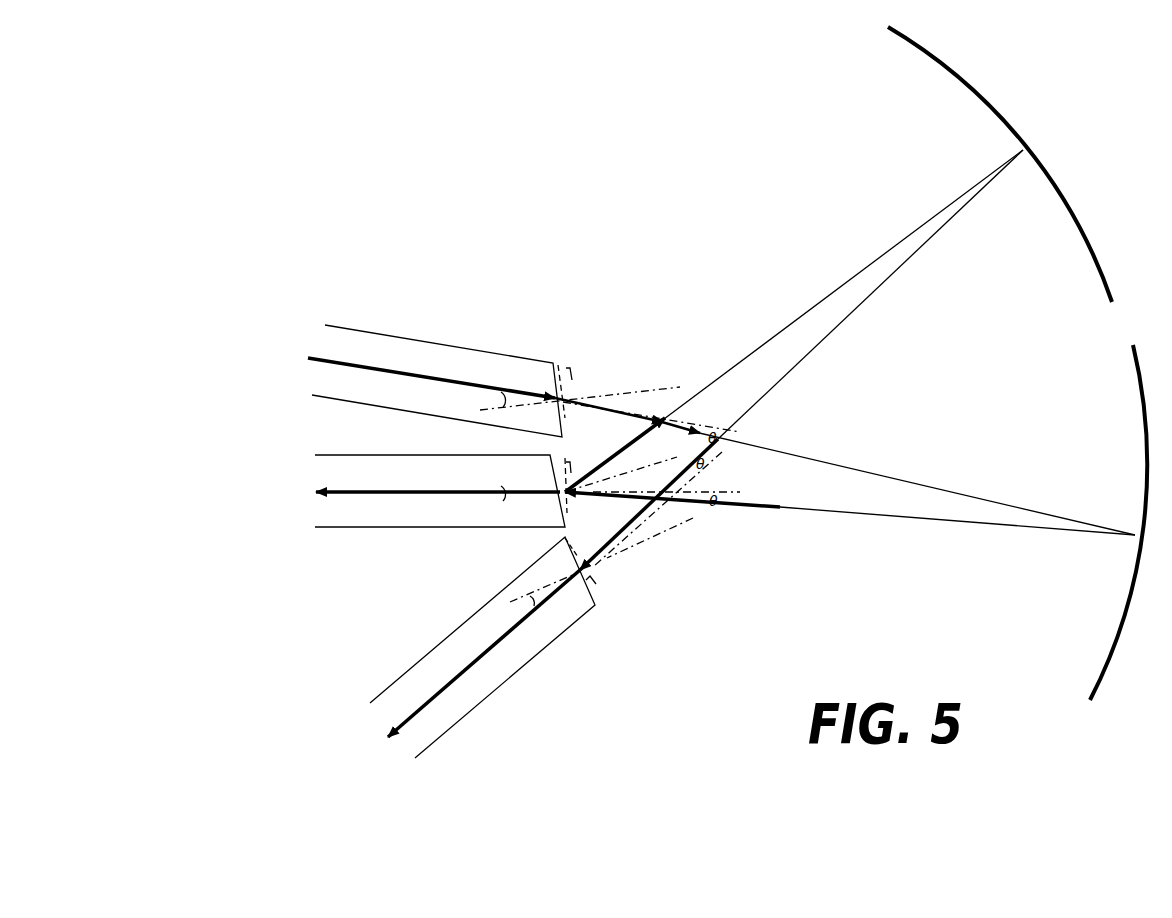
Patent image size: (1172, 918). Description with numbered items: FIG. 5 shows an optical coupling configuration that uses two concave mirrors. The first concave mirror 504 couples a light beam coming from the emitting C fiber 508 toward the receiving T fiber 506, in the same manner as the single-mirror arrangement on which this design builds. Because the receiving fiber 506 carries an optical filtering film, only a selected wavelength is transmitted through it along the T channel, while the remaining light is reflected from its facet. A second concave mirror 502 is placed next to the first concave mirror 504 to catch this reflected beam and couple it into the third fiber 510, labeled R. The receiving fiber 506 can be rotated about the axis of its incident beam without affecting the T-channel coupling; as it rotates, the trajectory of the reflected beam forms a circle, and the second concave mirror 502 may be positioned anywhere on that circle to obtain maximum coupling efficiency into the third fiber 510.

The second concave mirror 502 is at (1000, 164).
The first concave mirror 504 is at (1104, 522).
The receiving fiber 506 is at (400, 489).
The C fiber (coupling fiber, also 302) 508 is at (395, 373).
The third fiber 510 is at (451, 651).